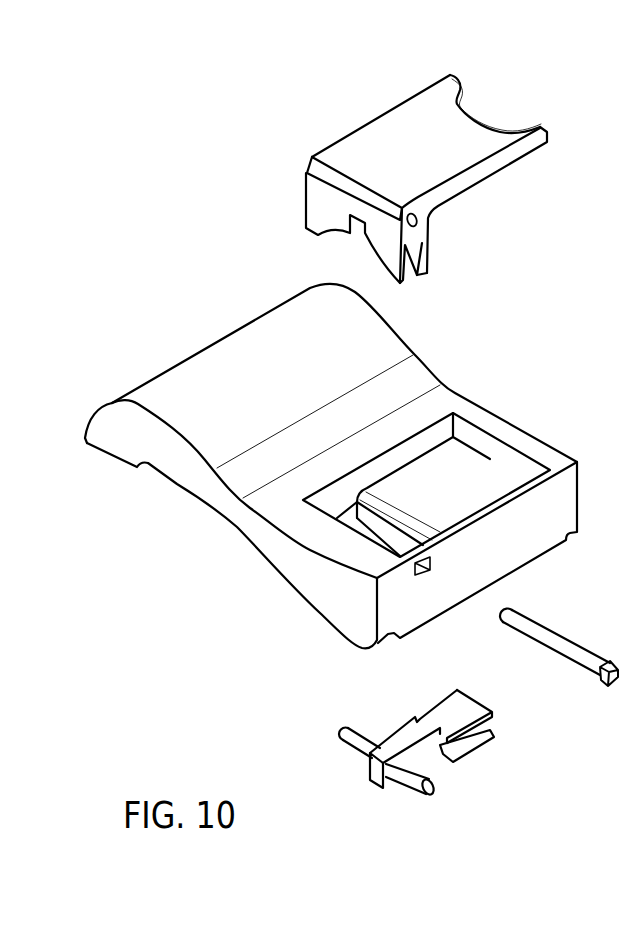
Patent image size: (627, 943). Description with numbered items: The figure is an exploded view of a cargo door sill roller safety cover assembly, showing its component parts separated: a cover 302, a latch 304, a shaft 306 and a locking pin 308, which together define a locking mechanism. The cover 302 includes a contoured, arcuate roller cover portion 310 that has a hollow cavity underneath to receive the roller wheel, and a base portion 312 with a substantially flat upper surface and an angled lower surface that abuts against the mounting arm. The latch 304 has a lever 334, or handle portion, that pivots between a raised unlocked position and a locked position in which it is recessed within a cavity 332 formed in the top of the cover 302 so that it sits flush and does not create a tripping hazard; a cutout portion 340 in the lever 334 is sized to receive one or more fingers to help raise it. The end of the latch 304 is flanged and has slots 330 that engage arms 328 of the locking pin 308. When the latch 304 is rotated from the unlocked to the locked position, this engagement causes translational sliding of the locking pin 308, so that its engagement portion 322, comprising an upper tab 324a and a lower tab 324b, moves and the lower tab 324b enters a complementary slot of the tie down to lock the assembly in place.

The cover 302 is at (227, 368).
The latch 304 is at (345, 114).
The shaft 306 is at (547, 635).
The locking pin 308 is at (504, 761).
The roller cover portion 310 is at (233, 298).
The base portion 312 is at (317, 577).
The engagement portion 322 is at (473, 700).
The upper tab 324a is at (437, 700).
The lower tab 324b is at (497, 723).
The arms 328 is at (350, 743).
The slots 330 is at (420, 270).
The cavity 332 is at (462, 482).
The lever 334 is at (412, 127).
The cutout portion 340 is at (498, 117).